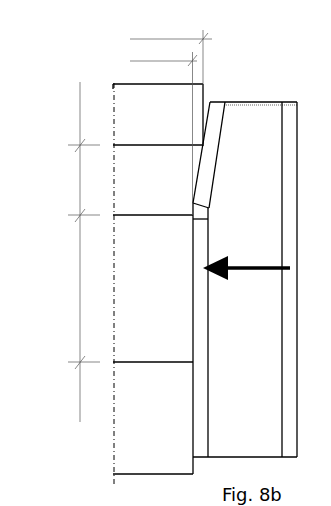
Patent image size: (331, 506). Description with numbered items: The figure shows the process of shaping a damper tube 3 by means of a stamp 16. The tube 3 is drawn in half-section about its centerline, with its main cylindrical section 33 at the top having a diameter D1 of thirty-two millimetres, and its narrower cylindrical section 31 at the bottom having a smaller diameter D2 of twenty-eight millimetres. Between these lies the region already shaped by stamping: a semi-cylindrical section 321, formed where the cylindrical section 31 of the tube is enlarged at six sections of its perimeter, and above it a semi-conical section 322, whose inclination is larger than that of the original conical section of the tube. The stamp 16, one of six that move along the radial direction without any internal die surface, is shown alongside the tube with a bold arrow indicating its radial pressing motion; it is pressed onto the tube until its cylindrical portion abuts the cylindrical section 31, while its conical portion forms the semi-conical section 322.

The tube 3 is at (135, 440).
The narrower cylindrical section 31 is at (78, 375).
The semi-cylindrical section 321 is at (78, 235).
The semi-conical section 322 is at (78, 171).
The main cylindrical section 33 is at (78, 108).
The stamp 16 is at (255, 138).
The diameter of main section D1 is at (156, 86).
The diameter of narrower cylindrical section D2 is at (148, 132).